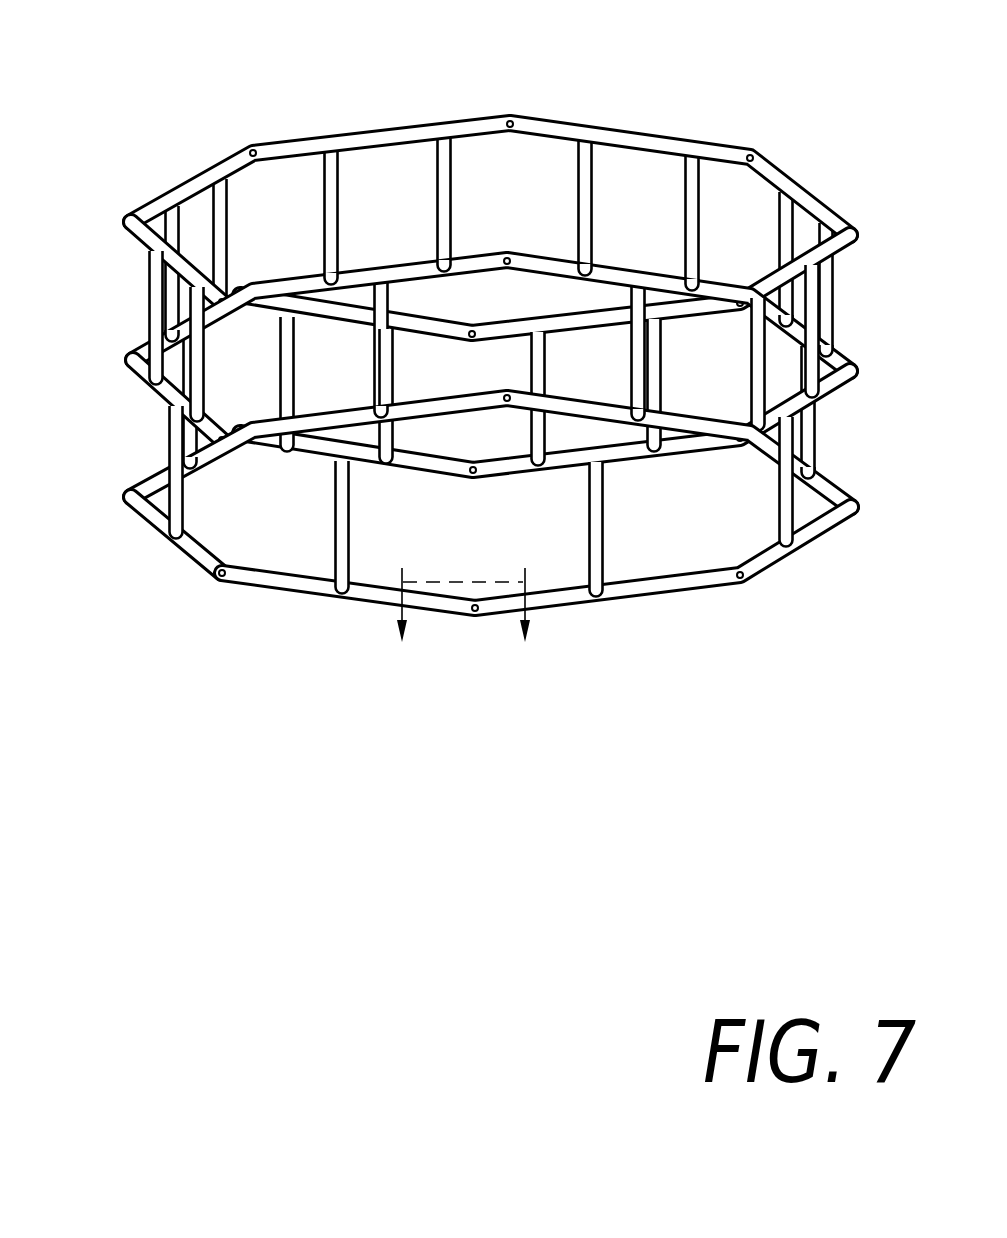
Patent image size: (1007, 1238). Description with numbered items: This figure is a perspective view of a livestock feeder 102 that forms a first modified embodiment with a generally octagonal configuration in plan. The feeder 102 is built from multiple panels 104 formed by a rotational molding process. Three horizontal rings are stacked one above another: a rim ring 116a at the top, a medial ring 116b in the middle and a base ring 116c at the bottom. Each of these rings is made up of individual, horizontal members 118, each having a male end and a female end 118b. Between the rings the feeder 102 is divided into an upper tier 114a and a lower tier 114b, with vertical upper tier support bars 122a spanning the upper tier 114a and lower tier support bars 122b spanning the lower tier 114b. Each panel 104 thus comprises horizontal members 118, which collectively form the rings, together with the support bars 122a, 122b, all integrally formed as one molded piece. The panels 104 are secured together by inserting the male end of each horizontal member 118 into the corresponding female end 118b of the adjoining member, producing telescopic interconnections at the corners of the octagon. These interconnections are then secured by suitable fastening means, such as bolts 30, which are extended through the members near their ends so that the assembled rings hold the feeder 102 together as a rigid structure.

The feeder 102 is at (444, 351).
The panel 104 is at (540, 603).
The upper tier 114a is at (148, 293).
The lower tier 114b is at (166, 445).
The rim ring 116a is at (620, 127).
The medial ring 116b is at (310, 463).
The base ring 116c is at (268, 593).
The horizontal member 118 is at (292, 137).
The member female end 118b is at (456, 338).
The upper tier support bar 122a is at (580, 200).
The lower tier support bar 122b is at (587, 538).
The bolt 30 is at (489, 434).